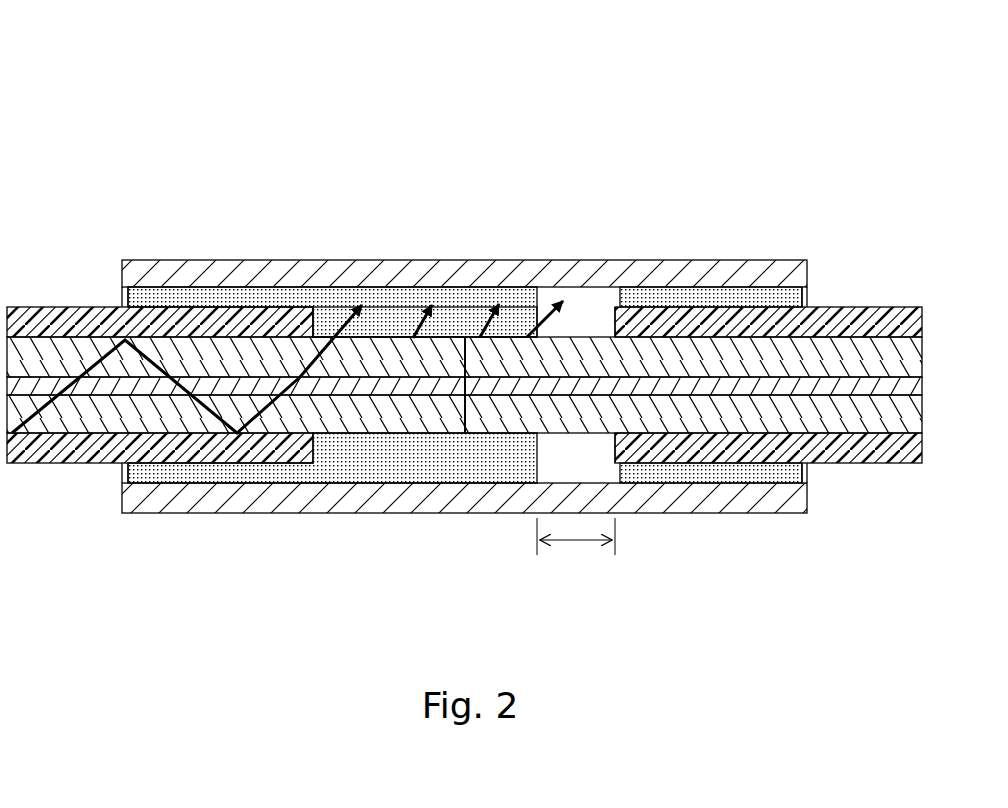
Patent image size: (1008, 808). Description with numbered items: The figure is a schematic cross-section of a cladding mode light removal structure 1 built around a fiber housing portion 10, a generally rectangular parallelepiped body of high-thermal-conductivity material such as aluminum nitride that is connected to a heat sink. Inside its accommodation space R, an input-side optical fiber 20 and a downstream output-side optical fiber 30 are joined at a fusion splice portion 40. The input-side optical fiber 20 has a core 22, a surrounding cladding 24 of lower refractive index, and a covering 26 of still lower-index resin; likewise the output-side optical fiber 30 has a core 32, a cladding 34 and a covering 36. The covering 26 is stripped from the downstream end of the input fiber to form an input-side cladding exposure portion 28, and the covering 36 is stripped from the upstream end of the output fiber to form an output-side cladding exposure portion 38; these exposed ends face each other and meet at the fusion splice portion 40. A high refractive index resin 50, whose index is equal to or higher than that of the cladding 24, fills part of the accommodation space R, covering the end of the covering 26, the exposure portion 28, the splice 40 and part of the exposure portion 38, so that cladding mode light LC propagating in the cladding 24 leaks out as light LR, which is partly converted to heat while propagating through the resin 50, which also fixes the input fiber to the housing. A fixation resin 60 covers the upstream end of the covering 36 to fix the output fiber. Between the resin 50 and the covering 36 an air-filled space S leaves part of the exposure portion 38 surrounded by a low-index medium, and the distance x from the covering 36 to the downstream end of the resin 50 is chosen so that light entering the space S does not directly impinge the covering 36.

The cladding mode light removal structure 1 is at (464, 323).
The fiber housing portion 10 is at (346, 506).
The input-side optical fiber 20 is at (236, 393).
The core 22 is at (378, 383).
The cladding 24 is at (180, 424).
The covering 26 is at (213, 317).
The input-side cladding exposure portion 28 is at (406, 337).
The output-side optical fiber 30 is at (693, 384).
The core 32 is at (660, 392).
The cladding 34 is at (740, 414).
The covering 36 is at (727, 318).
The output-side cladding exposure portion 38 is at (594, 337).
The fusion splice portion 40 is at (457, 424).
The high refractive index resin 50 is at (468, 306).
The fixation resin 60 is at (677, 304).
The cladding mode light LC is at (321, 343).
The cladding mode light leaked into resin LR is at (336, 338).
The space S is at (565, 333).
The accommodation space R is at (478, 496).
The distance x is at (576, 540).